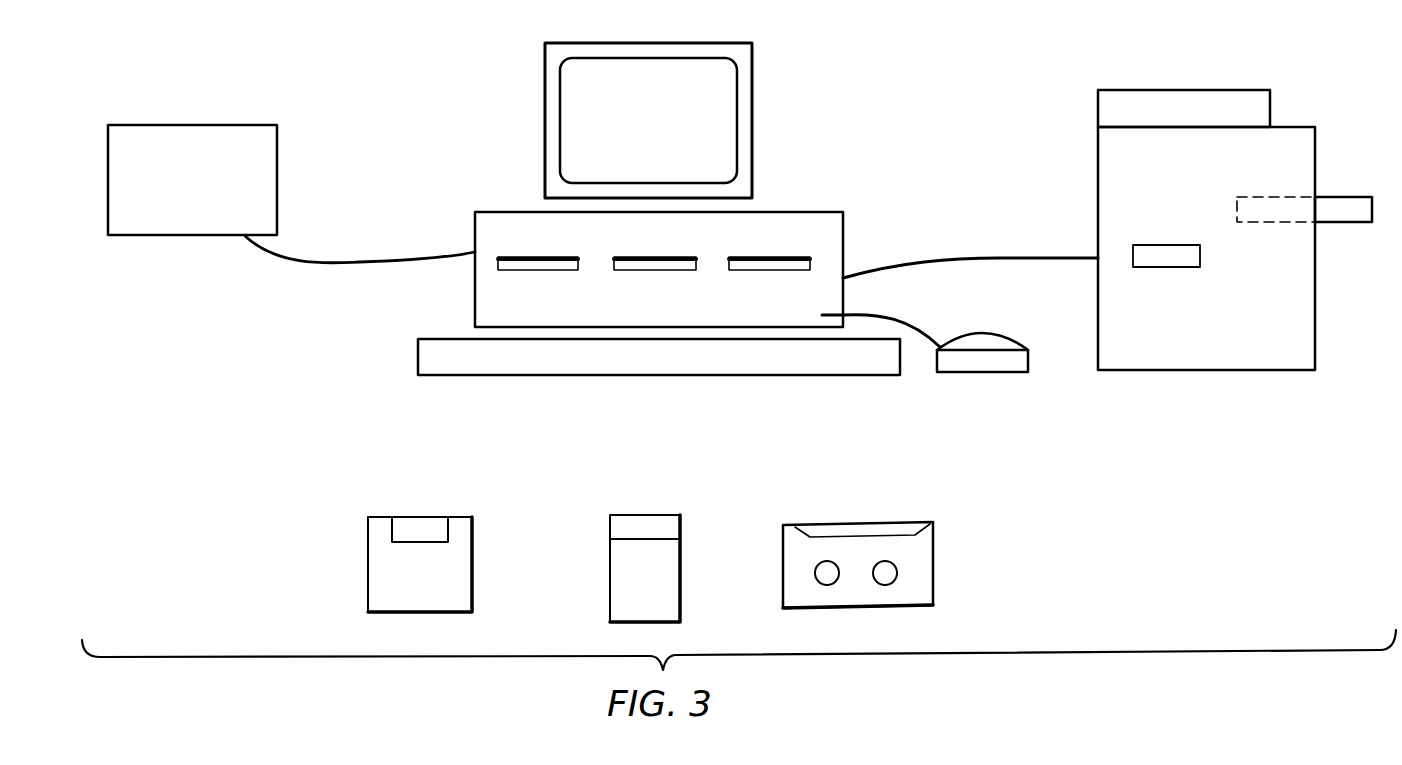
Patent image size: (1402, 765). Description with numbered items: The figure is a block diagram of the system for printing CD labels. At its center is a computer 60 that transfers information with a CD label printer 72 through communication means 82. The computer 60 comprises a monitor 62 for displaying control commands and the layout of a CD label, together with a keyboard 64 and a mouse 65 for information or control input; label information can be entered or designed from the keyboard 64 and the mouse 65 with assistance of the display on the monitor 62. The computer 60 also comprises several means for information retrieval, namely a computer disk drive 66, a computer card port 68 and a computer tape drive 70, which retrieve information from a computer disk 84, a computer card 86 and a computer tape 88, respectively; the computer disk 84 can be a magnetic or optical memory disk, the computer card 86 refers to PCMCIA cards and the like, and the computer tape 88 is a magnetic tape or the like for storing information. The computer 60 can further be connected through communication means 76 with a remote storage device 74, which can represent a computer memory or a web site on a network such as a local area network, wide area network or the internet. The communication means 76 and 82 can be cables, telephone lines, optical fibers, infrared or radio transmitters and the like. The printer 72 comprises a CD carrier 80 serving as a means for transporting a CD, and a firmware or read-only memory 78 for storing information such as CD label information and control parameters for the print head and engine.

The computer 60 is at (818, 222).
The monitor 62 is at (715, 110).
The keyboard 64 is at (495, 376).
The mouse 65 is at (993, 375).
The computer disk drive 66 is at (558, 272).
The computer card port 68 is at (682, 272).
The computer tape drive 70 is at (760, 272).
The CD label printer 72 is at (1222, 82).
The remote storage device 74 is at (257, 125).
The communication means 76 is at (388, 266).
The firmware or read-only-memory (ROM) 78 is at (1168, 268).
The CD carrier 80 is at (1341, 208).
The communication means 82 is at (963, 258).
The computer disk 84 is at (368, 565).
The computer card 86 is at (610, 565).
The computer tape 88 is at (783, 565).